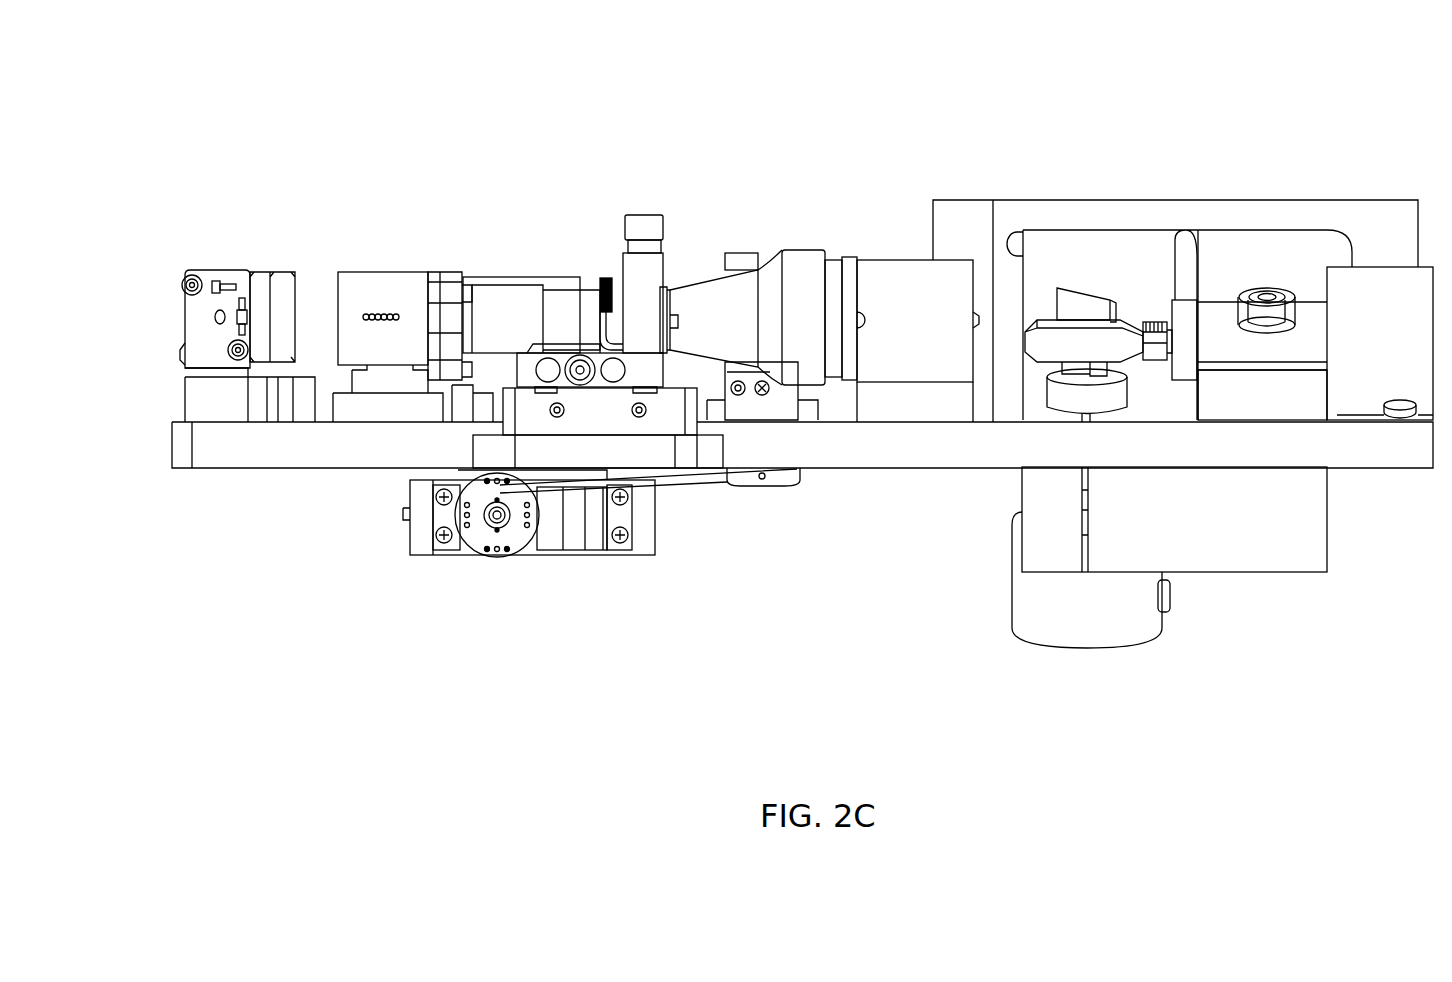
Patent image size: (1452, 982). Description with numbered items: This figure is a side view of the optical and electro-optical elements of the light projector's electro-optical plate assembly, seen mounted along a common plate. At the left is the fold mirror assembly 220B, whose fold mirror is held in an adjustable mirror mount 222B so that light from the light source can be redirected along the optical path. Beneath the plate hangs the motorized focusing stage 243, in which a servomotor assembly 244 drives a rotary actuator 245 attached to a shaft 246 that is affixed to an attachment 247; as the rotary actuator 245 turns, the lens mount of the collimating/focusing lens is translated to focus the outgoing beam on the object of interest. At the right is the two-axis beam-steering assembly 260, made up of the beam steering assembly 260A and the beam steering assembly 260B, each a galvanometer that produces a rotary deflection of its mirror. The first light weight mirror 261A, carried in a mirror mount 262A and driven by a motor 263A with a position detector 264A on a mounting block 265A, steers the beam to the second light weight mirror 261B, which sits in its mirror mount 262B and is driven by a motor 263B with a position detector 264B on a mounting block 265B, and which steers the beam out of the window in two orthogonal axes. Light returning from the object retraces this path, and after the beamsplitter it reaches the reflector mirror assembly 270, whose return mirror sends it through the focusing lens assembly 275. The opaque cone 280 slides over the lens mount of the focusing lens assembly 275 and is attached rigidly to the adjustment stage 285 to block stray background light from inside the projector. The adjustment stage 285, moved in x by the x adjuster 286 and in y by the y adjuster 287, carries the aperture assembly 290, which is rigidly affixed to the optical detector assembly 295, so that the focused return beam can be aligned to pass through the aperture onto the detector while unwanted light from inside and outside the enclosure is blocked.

The fold mirror assembly 220B is at (155, 277).
The adjustable mirror mount 222B is at (210, 337).
The optical detector assembly 295 is at (377, 258).
The aperture assembly 290 is at (491, 262).
The x adjuster 286 is at (568, 352).
The adjustment stage 285 is at (597, 200).
The y adjuster 287 is at (643, 213).
The opaque cone 280 is at (708, 265).
The focusing lens assembly 275 is at (838, 245).
The reflector mirror assembly 270 is at (915, 295).
The two-axis beam-steering assembly 260 is at (1120, 95).
The beam steering assembly 260A is at (1060, 262).
The beam steering assembly 260B is at (1152, 270).
The light weight mirror 261A is at (1090, 290).
The light weight mirror 261B is at (1036, 358).
The mirror mount 262A is at (1062, 380).
The mirror mount 262B is at (1143, 325).
The motor 263A is at (1072, 402).
The motor 263B is at (1190, 300).
The position detector 264A is at (1013, 612).
The position detector 264B is at (1383, 265).
The mounting block 265A is at (1227, 572).
The mounting block 265B is at (1275, 395).
The motorized focusing stage 243 is at (570, 598).
The servomotor assembly 244 is at (458, 583).
The rotary actuator 245 is at (477, 556).
The shaft 246 is at (687, 485).
The attachment 247 is at (768, 488).